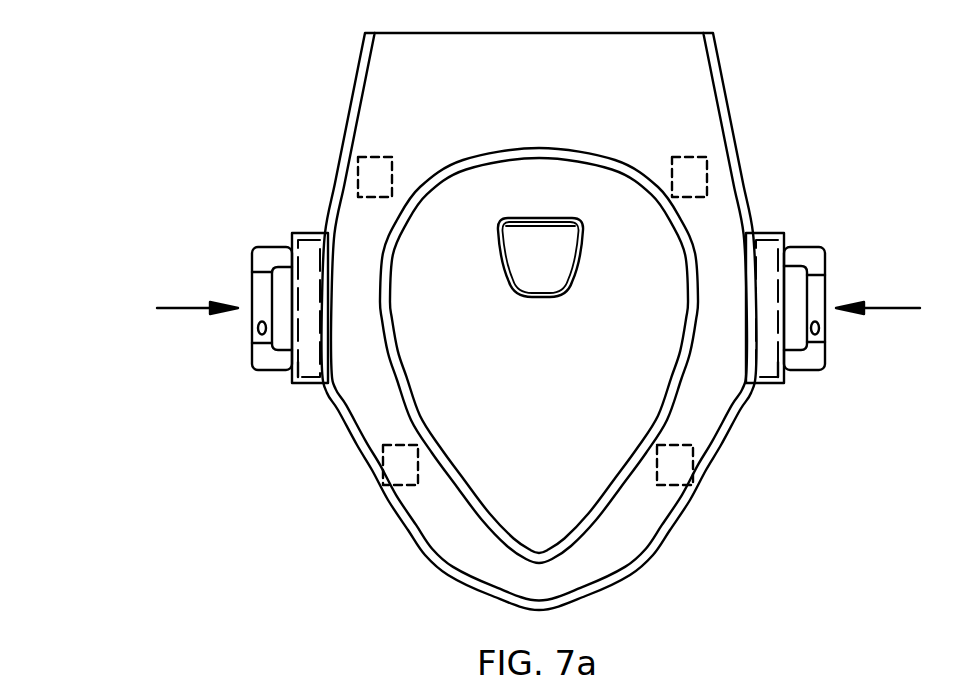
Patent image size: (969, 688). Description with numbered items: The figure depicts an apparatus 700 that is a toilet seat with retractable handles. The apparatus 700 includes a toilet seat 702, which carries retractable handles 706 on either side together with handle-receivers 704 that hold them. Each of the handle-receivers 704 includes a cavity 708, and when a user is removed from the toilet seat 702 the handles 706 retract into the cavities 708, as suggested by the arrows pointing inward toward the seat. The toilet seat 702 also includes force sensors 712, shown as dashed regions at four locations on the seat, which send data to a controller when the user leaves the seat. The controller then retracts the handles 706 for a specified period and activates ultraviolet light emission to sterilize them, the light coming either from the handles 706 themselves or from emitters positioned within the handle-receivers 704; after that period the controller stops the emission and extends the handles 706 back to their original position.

The apparatus 700 is at (136, 74).
The toilet seat 702 is at (561, 98).
The handle-receivers 704 is at (303, 236).
The retractable handles 706 is at (262, 258).
The cavities 708 is at (306, 372).
The force sensors 712 is at (377, 157).